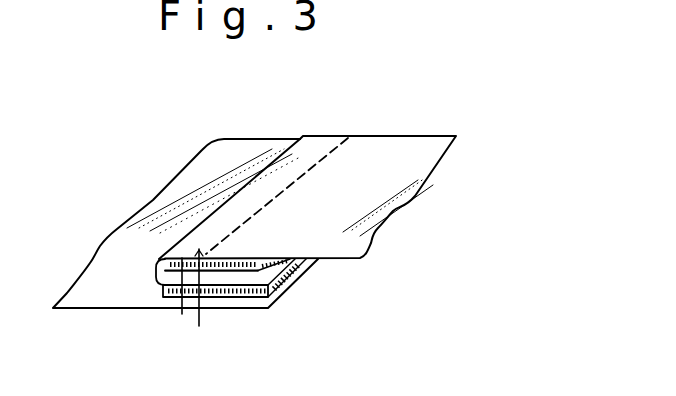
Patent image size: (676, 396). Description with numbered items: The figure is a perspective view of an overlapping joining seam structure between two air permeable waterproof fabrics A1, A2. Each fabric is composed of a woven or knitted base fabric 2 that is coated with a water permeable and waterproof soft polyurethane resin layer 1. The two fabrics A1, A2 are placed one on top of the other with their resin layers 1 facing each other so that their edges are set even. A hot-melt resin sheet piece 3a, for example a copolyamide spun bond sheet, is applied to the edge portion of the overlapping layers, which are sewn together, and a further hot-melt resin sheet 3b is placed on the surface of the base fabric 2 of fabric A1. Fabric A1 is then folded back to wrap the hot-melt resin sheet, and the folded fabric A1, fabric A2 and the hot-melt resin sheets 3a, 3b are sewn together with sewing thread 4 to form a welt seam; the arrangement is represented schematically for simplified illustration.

The polyurethane resin layer 1 is at (285, 192).
The air permeable waterproof fabric A1 is at (175, 166).
The air permeable waterproof fabric A2 is at (446, 167).
The base fabric 2 is at (210, 281).
The hot-melt resin sheet piece 3a is at (288, 270).
The hot-melt resin sheet 3b is at (280, 297).
The sewing thread 4 is at (349, 137).